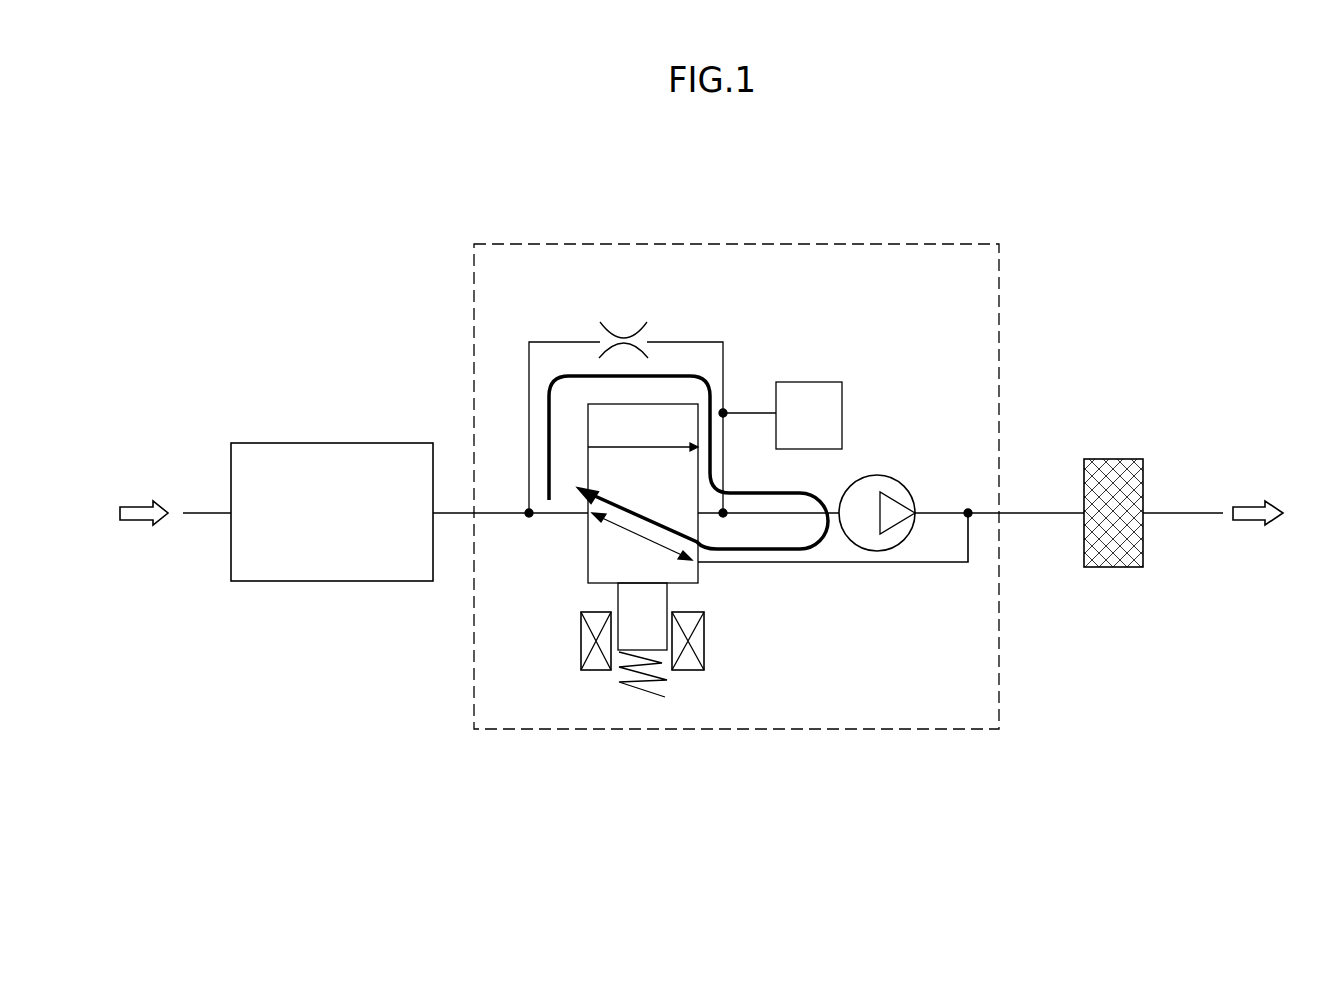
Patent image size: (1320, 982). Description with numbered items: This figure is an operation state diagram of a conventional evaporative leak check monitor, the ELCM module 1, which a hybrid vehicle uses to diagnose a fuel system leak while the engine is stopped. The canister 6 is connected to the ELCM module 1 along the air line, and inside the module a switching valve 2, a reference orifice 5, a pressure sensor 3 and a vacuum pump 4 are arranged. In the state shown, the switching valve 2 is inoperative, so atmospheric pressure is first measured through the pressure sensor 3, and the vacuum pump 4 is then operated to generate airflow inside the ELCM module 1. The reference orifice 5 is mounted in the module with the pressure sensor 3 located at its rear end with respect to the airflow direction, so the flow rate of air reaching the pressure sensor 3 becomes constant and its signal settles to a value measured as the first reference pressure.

The ELCM module 1 is at (839, 243).
The switching valve 2 is at (585, 558).
The pressure sensor 3 is at (842, 413).
The vacuum pump 4 is at (908, 538).
The reference orifice 5 is at (600, 325).
The canister 6 is at (332, 443).